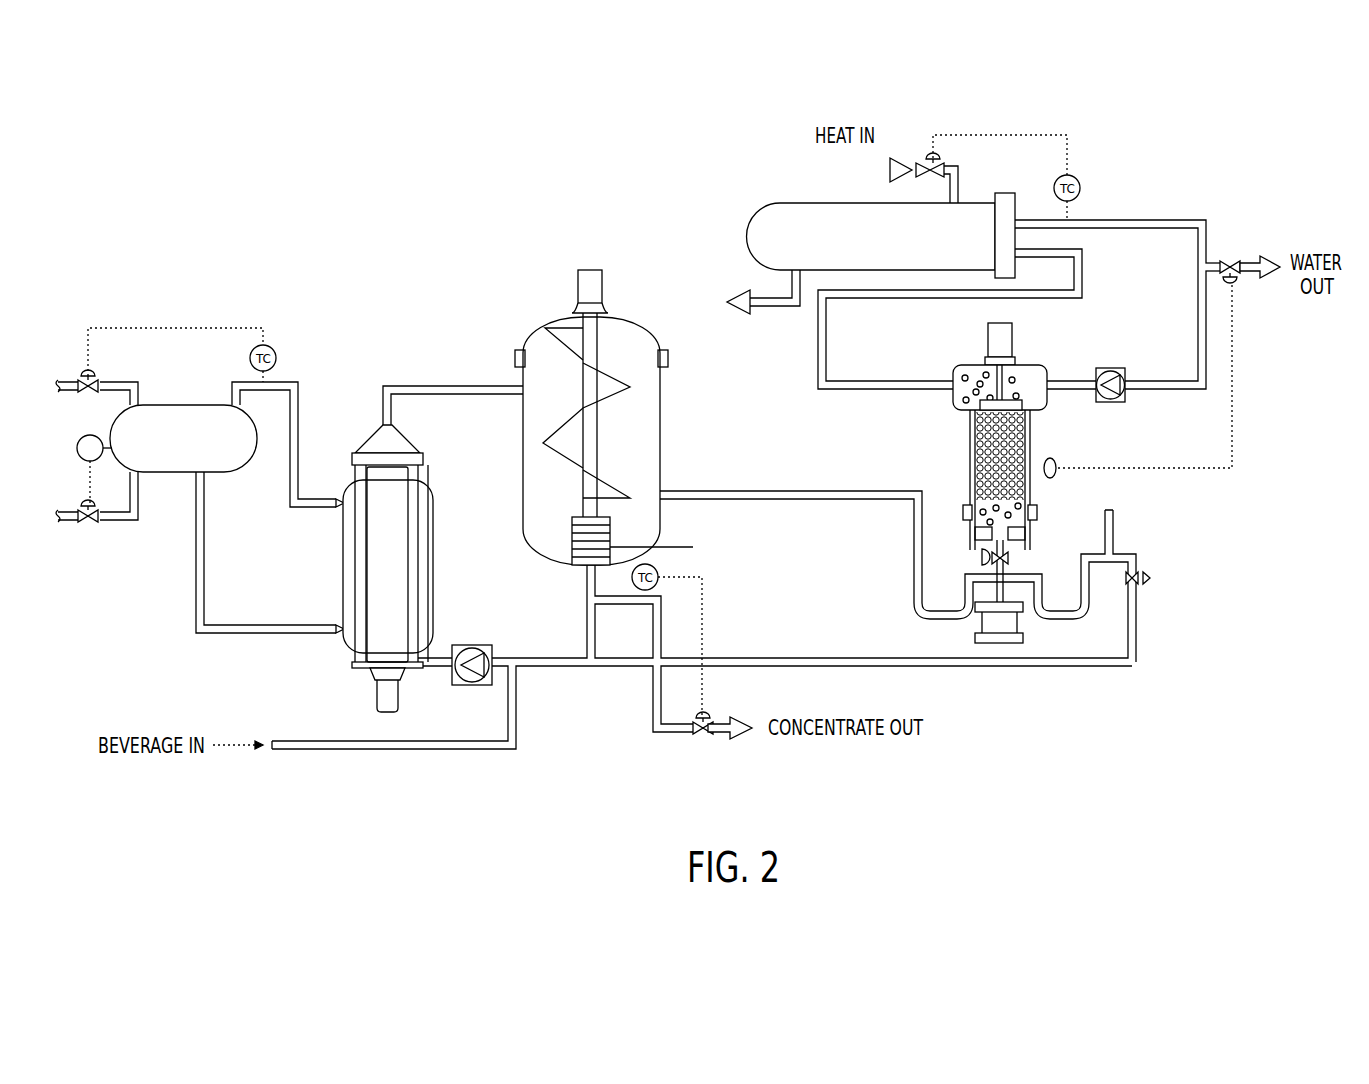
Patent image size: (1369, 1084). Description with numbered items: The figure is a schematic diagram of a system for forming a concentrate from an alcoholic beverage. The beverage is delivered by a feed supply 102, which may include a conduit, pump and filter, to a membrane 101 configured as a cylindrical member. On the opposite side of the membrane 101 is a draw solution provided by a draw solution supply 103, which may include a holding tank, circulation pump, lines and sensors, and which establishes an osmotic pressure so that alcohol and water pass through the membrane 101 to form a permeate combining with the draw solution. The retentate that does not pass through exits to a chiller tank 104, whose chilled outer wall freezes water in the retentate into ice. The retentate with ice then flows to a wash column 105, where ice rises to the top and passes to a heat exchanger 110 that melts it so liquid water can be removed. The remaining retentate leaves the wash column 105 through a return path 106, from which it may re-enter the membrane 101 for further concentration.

The membrane 101 is at (355, 572).
The feed supply 102 is at (367, 751).
The draw solution supply 103 is at (182, 417).
The chiller tank 104 is at (537, 337).
The wash column 105 is at (1033, 440).
The return path 106 is at (1110, 668).
The heat exchanger 110 is at (753, 217).